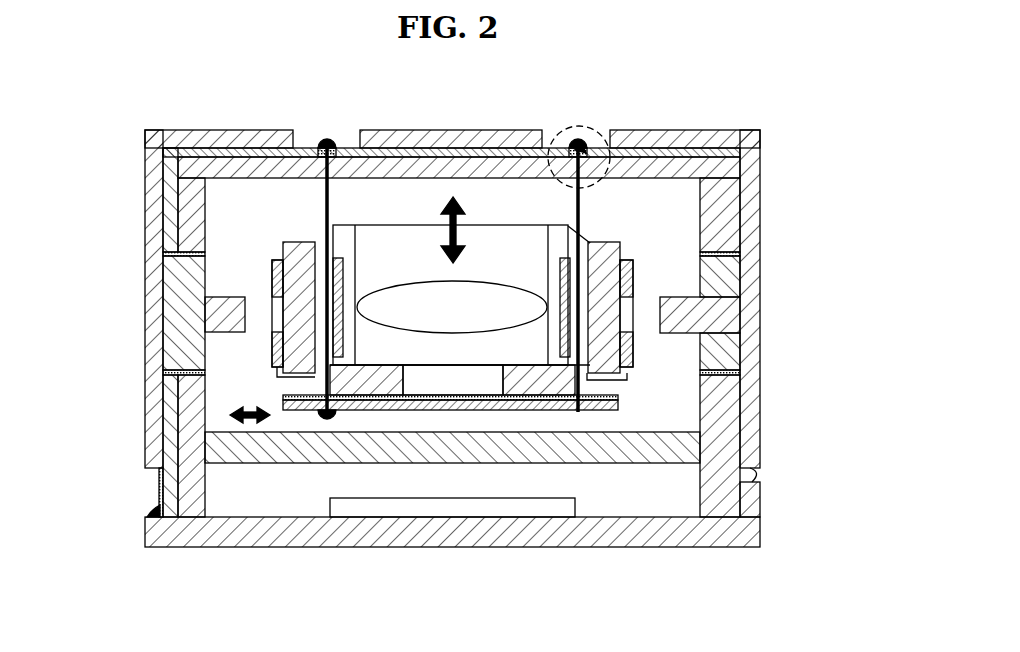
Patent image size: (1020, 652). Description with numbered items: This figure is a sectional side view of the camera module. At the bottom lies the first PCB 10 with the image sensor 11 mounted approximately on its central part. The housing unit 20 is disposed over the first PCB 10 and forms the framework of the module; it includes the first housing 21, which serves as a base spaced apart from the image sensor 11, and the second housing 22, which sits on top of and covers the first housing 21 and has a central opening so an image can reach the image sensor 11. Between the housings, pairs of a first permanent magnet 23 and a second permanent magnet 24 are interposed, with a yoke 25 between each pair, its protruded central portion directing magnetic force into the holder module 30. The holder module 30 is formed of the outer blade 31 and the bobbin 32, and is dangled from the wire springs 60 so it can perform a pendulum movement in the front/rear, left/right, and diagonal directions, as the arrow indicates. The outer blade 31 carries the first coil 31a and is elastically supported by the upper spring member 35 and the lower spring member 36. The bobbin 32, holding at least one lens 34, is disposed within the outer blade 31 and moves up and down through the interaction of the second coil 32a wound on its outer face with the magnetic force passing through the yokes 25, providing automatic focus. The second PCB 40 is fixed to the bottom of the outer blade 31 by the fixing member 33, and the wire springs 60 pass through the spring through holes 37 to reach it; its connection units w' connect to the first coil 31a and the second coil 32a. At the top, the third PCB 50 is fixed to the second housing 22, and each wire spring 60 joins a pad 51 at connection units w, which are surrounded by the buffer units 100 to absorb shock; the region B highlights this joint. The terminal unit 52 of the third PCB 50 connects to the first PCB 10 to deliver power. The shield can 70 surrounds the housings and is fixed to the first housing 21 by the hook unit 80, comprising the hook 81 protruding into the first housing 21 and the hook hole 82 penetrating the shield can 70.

The shield can 70 is at (146, 133).
The third PCB 50 is at (195, 150).
The pad 51 is at (336, 144).
The connection units w is at (336, 318).
The detail region B is at (556, 132).
The buffer units 100 is at (590, 152).
The housing unit 20 is at (80, 200).
The first housing 21 is at (150, 377).
The second housing 22 is at (185, 222).
The second permanent magnet 24 is at (185, 255).
The yoke 25 is at (197, 313).
The first permanent magnet 23 is at (168, 333).
The spring member 36 is at (707, 328).
The holder module 30 is at (653, 249).
The wire springs 60 is at (331, 210).
The bobbin 32 is at (353, 253).
The lens 34 is at (493, 297).
The second coil 32a is at (340, 336).
The spring member 35 is at (286, 242).
The first coil 31a is at (276, 262).
The outer blade 31 is at (298, 386).
The fixing member 33 is at (284, 418).
The spring through holes 37 is at (590, 386).
The second PCB 40 is at (390, 409).
The connection units w' is at (481, 457).
The terminal unit 52 is at (160, 485).
The first PCB 10 is at (540, 545).
The image sensor 11 is at (465, 513).
The hook 81 is at (758, 490).
The hook hole 82 is at (760, 473).
The hook unit 80 is at (820, 465).